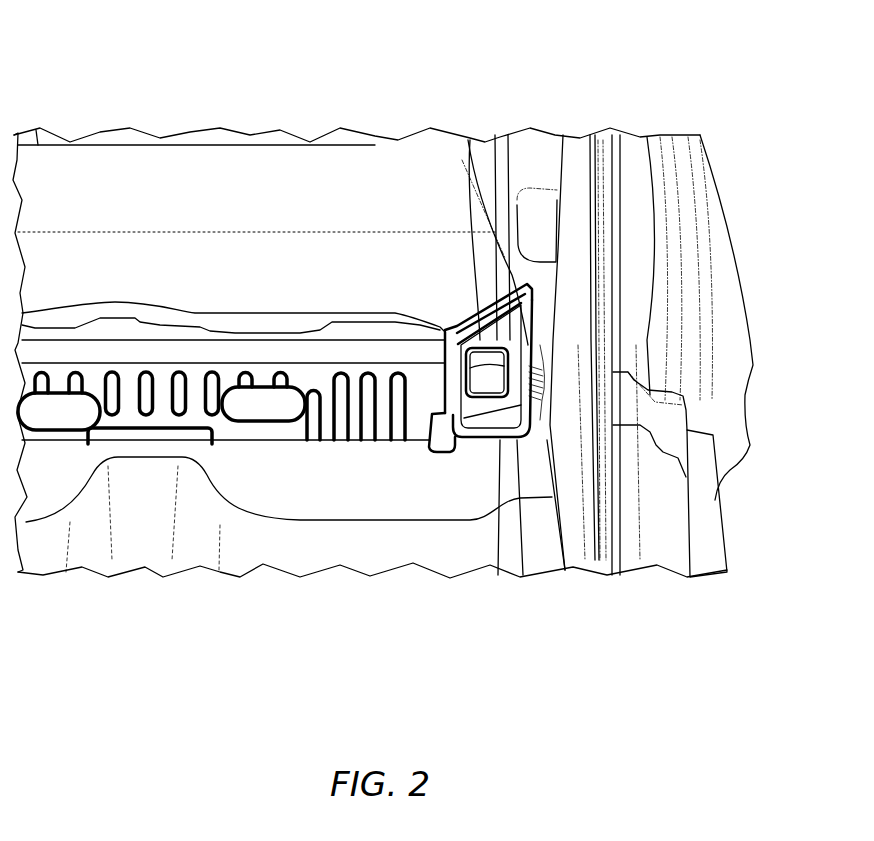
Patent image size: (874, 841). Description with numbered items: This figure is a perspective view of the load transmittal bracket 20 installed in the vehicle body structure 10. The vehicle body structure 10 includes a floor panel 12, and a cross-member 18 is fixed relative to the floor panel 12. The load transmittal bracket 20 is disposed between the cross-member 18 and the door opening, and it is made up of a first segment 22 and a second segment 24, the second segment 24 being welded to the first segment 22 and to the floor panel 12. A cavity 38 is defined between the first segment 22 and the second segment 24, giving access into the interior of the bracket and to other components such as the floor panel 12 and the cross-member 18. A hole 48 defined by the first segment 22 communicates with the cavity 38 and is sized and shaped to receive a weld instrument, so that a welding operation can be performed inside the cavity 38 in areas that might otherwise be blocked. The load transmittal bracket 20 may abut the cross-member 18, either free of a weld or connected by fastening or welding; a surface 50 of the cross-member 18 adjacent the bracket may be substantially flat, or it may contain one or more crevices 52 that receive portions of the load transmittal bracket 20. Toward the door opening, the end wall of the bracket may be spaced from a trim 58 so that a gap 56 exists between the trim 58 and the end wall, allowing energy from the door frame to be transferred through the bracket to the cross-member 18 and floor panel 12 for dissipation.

The vehicle body structure 10 is at (411, 293).
The floor panel 12 is at (305, 491).
The cross-member 18 is at (195, 350).
The load transmittal bracket 20 is at (470, 140).
The first segment 22 is at (542, 345).
The second segment 24 is at (503, 150).
The cavity 38 is at (484, 380).
The hole 48 is at (497, 380).
The surface 50 is at (440, 378).
The crevice 52 is at (428, 449).
The gap 56 is at (538, 360).
The trim 58 is at (543, 345).